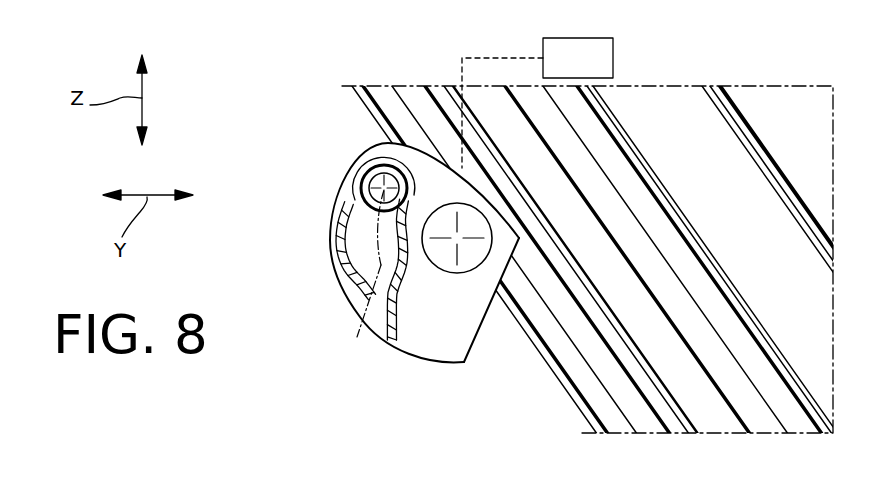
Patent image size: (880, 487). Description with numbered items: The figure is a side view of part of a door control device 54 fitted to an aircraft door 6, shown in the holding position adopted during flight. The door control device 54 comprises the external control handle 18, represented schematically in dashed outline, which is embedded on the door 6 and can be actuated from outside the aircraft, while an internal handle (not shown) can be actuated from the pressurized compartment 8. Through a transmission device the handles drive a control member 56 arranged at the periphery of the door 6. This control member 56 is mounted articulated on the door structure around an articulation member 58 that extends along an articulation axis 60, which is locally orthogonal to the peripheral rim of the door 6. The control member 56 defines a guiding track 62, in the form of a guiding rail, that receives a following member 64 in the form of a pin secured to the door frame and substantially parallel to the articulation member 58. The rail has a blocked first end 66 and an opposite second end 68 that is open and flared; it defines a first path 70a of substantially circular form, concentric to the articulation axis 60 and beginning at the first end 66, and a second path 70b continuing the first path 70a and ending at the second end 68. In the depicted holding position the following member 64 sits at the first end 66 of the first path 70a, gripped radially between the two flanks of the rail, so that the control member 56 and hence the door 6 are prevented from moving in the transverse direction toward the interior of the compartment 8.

The door 6 is at (558, 345).
The pressurized compartment 8 is at (288, 234).
The external control handle 18 is at (613, 62).
The door control device 54 is at (337, 177).
The control member 56 is at (485, 290).
The articulation member 58 is at (467, 257).
The articulation axis 60 is at (457, 238).
The guiding track 62 is at (355, 303).
The following member 64 is at (368, 181).
The first end 66 is at (375, 168).
The second end 68 is at (377, 337).
The first path 70a is at (371, 246).
The second path 70b is at (373, 305).